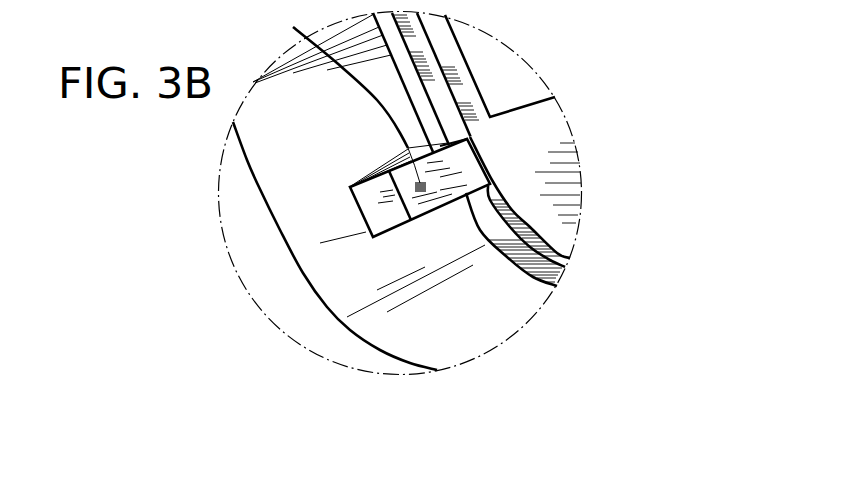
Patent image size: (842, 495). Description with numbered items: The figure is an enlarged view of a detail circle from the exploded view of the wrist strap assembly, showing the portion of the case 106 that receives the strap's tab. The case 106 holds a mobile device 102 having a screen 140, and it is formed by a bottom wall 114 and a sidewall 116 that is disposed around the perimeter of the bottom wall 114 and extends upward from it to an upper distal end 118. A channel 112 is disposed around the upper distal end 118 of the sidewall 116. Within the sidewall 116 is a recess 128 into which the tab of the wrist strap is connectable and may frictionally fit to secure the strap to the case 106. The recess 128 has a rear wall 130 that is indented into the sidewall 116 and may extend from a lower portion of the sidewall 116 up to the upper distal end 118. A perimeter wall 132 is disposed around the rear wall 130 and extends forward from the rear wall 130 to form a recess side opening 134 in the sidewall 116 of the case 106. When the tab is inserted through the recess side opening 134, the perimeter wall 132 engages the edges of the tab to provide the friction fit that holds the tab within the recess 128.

The mobile device 102 is at (557, 183).
The case 106 is at (493, 327).
The channel 112 is at (562, 266).
The bottom wall 114 is at (258, 185).
The sidewall 116 is at (461, 328).
The upper distal end 118 is at (557, 252).
The recess 128 is at (299, 32).
The rear wall 130 is at (468, 175).
The perimeter wall 132 is at (372, 210).
The recess side opening 134 is at (416, 233).
The screen 140 is at (494, 73).